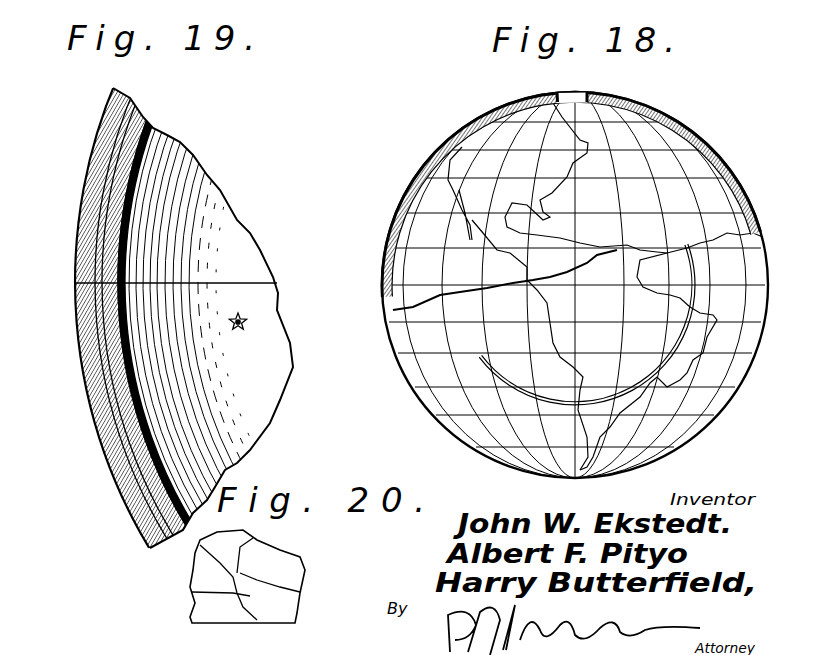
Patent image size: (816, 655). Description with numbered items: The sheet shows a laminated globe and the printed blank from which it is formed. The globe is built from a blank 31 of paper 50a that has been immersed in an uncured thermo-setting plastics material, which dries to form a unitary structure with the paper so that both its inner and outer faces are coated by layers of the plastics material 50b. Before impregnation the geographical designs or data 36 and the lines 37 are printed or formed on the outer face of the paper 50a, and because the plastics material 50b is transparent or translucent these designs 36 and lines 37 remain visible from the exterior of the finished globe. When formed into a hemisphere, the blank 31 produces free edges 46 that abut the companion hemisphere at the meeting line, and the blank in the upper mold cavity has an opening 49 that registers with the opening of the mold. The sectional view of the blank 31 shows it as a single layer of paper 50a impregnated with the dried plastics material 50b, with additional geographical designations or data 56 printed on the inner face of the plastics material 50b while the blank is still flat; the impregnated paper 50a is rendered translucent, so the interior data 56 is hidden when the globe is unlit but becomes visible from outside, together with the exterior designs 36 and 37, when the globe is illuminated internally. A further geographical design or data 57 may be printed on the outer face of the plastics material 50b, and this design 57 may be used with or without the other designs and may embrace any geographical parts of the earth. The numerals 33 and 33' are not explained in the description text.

In FIG. 19, the blank 31 is at (79, 181).
In FIG. 19, the map sheet gore 33 is at (204, 314).
In FIG. 18, the map sheet gores 33' is at (576, 286).
In FIG. 18, the geographical designs or data 36 is at (485, 138).
In FIG. 18, the lines 37 is at (653, 177).
In FIG. 19, the free edges 46 is at (75, 298).
In FIG. 18, the opening 49 is at (581, 92).
In FIG. 19, the paper 50a is at (167, 137).
In FIG. 18, the paper 50a is at (421, 233).
In FIG. 19, the thermo-setting plastics material 50b is at (60, 428).
In FIG. 18, the thermo-setting plastics material 50b is at (392, 235).
In FIG. 20, the thermo-setting plastics material 50b is at (207, 567).
In FIG. 19, the interior design or data 56 is at (250, 323).
In FIG. 19, the geographical design or data 57 is at (79, 223).
In FIG. 20, the geographical design or data 57 is at (200, 593).